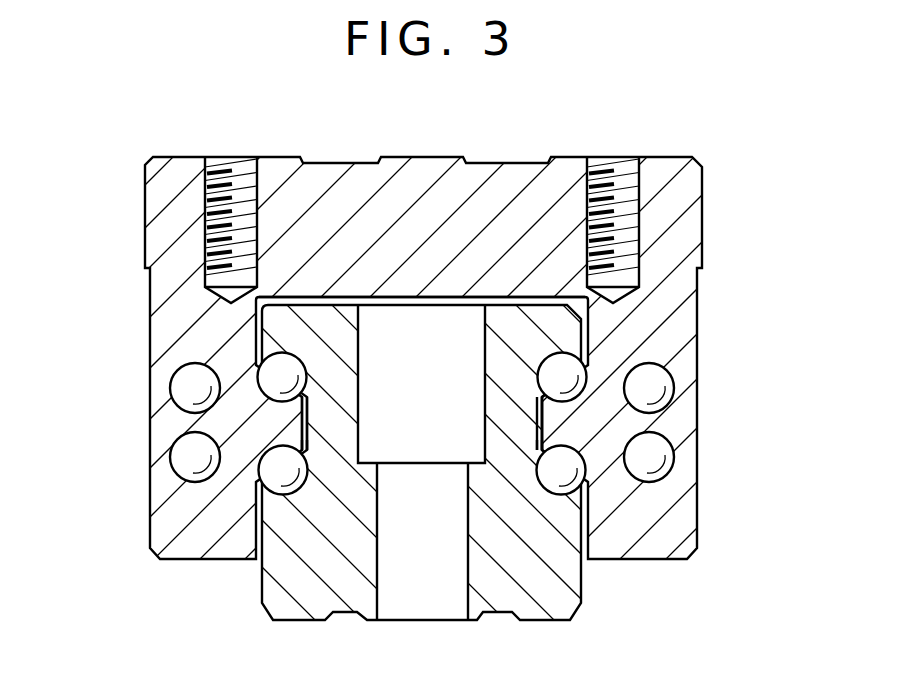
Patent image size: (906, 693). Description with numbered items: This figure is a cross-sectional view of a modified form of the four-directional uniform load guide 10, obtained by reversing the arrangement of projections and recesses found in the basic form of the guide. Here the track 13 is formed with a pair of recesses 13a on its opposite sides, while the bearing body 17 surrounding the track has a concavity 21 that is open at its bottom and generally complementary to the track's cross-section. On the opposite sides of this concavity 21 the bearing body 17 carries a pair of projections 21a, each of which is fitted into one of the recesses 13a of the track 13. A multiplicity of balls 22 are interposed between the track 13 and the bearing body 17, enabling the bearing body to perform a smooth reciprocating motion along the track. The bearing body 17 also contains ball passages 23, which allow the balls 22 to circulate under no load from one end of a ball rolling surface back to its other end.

The guide 10 is at (608, 134).
The track 13 is at (582, 596).
The recesses 13a is at (303, 400).
The bearing body 17 is at (701, 224).
The concavity 21 is at (467, 299).
The projections 21a is at (307, 447).
The balls 22 is at (265, 373).
The ball passages 23 is at (182, 402).